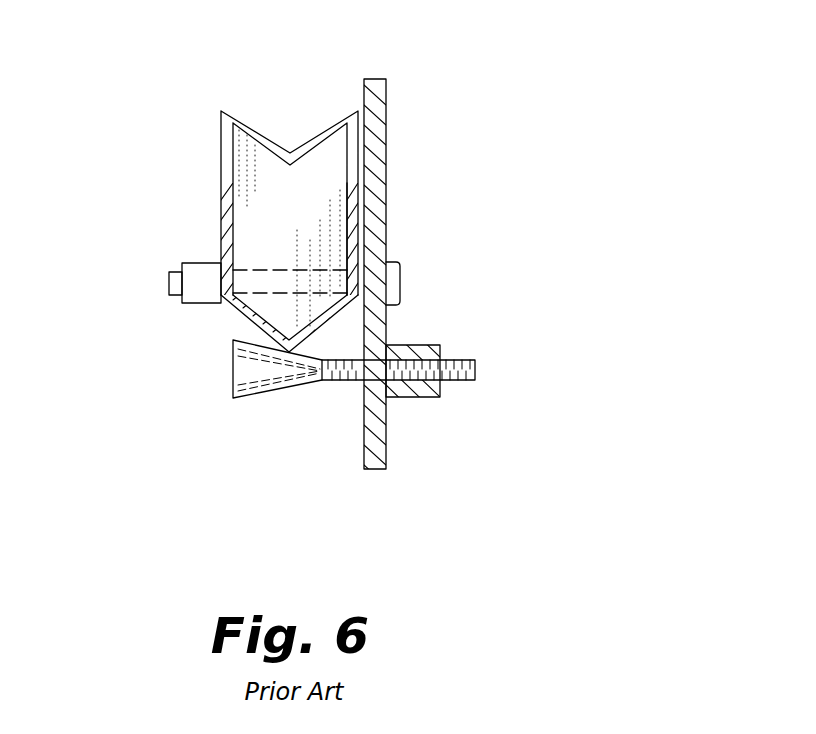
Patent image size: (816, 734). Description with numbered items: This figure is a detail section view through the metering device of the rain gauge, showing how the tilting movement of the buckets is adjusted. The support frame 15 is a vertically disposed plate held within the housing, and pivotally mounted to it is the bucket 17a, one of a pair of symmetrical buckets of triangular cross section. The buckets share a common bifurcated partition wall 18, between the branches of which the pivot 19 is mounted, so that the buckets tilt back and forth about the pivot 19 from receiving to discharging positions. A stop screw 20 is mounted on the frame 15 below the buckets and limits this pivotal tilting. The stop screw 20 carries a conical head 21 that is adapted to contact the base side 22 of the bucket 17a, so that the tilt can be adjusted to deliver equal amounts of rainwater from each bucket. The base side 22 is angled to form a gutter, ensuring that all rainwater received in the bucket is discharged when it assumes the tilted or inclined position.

The support frame 15 is at (387, 110).
The bucket 17a is at (365, 180).
The bifurcated partition wall 18 is at (277, 207).
The pivot 19 is at (167, 285).
The stop screw 20 is at (333, 382).
The conical head 21 is at (247, 400).
The base side 22 is at (235, 315).